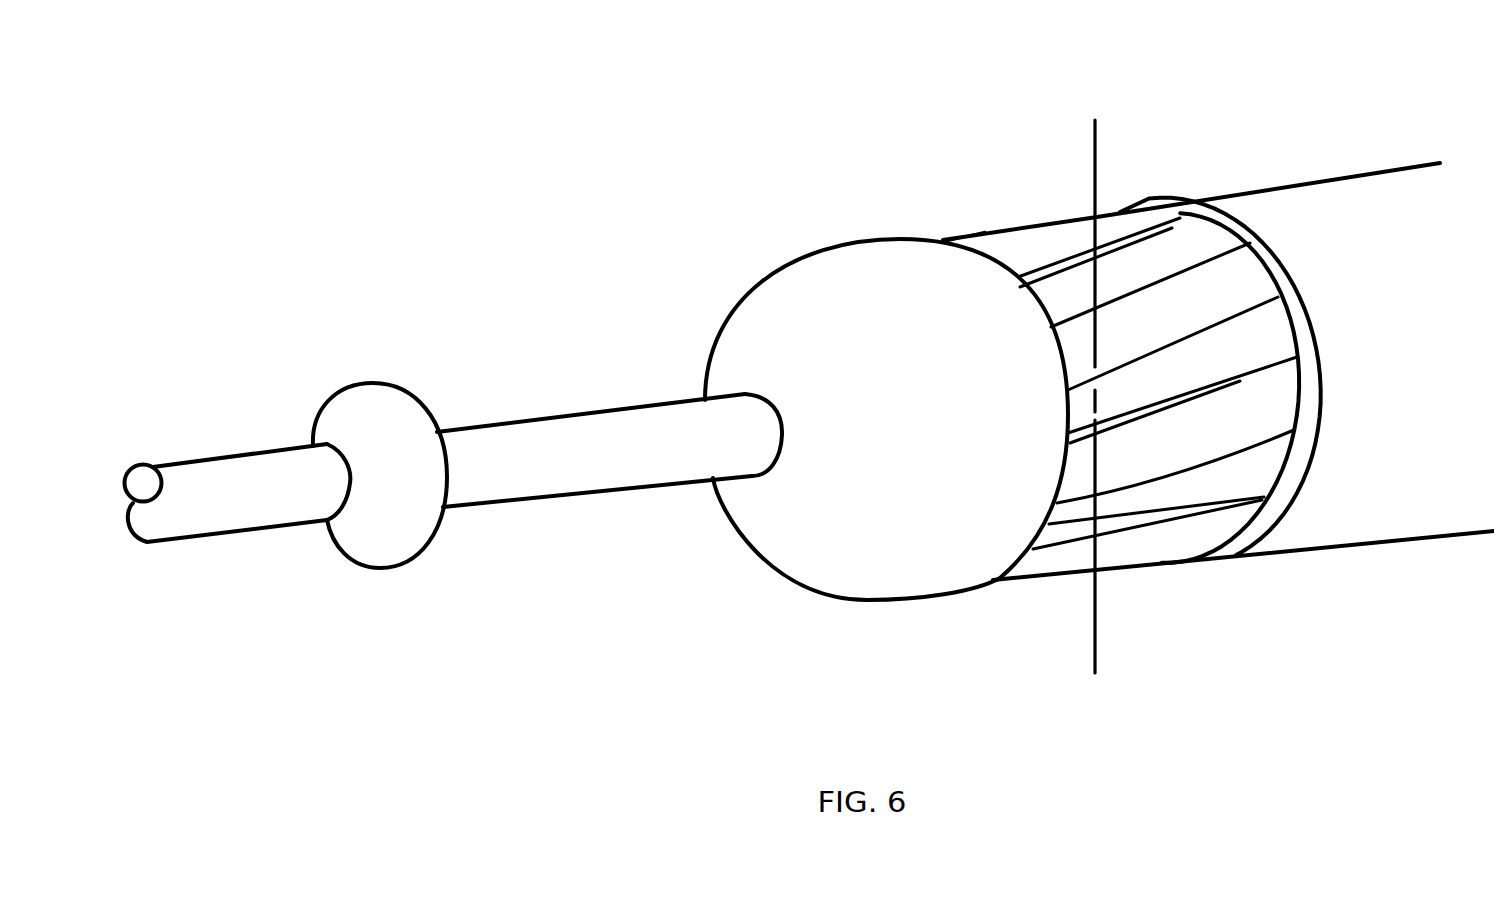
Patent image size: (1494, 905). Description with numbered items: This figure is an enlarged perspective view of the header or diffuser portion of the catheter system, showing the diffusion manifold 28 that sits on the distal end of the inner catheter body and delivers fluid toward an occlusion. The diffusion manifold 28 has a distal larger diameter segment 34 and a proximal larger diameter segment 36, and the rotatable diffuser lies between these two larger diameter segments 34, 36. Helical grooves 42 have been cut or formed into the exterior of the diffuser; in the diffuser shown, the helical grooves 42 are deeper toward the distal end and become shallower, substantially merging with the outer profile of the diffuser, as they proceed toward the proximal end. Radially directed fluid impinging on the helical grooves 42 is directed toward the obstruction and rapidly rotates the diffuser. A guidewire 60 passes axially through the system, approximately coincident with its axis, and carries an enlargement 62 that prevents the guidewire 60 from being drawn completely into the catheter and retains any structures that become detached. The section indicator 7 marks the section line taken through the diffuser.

The ball head 28 is at (850, 522).
The neck portion 34 is at (930, 225).
The tubular housing 36 is at (1125, 209).
The helical vanes 42 is at (1053, 303).
The shaft 60 is at (538, 498).
The spherical bearing 62 is at (407, 392).
The section line 7- 7 is at (1120, 673).